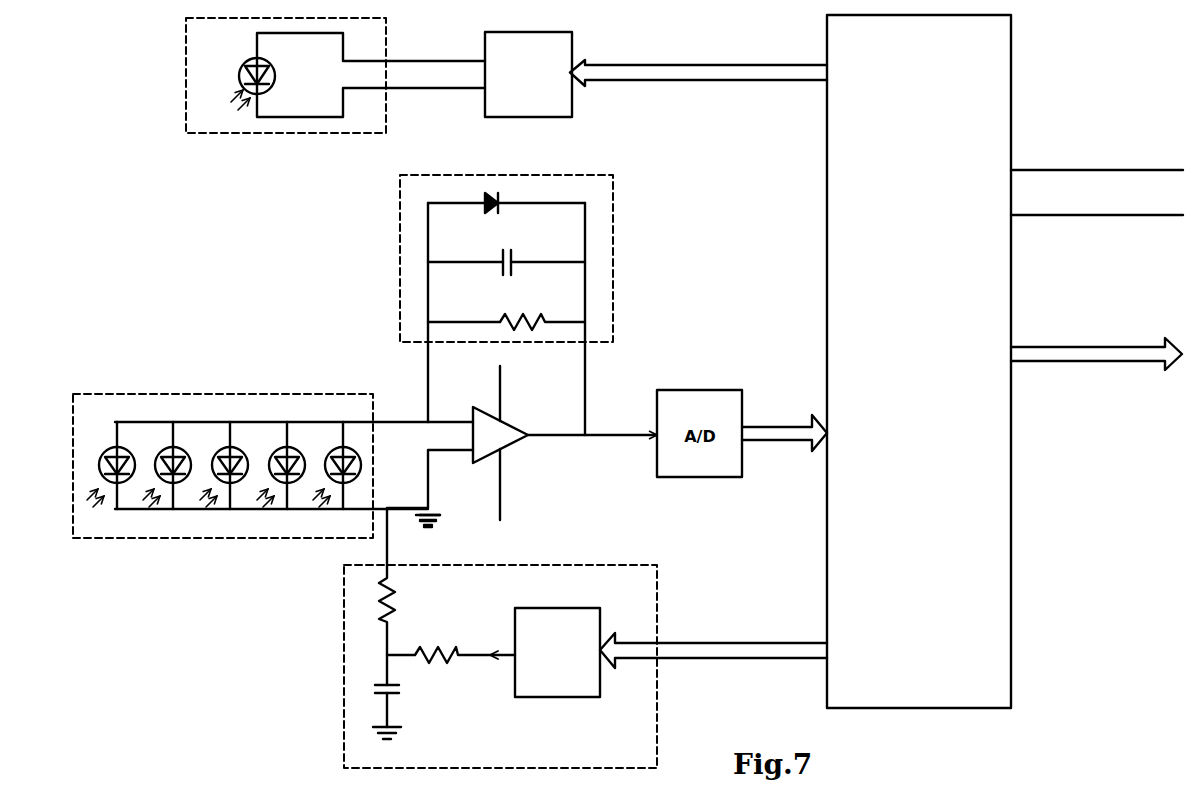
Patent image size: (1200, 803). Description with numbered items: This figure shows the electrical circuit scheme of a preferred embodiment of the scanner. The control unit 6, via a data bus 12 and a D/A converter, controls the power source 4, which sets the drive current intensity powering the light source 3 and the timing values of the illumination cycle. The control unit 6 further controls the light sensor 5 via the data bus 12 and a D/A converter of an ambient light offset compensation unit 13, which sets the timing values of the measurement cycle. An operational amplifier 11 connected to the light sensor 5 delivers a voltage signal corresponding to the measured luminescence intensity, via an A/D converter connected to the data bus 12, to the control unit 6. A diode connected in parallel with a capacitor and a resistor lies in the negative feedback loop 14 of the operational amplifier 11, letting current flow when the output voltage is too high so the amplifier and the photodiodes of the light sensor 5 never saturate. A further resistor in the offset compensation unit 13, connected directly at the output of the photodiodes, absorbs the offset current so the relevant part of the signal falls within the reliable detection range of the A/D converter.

The light source 3 is at (270, 123).
The power source 4 is at (528, 74).
The light sensor 5 is at (228, 407).
The control unit 6 is at (1005, 361).
The operational amplifier 11 is at (500, 441).
The data bus 12 is at (738, 72).
The ambient light offset compensation unit 13 is at (355, 657).
The feedback circuit 14 is at (603, 268).